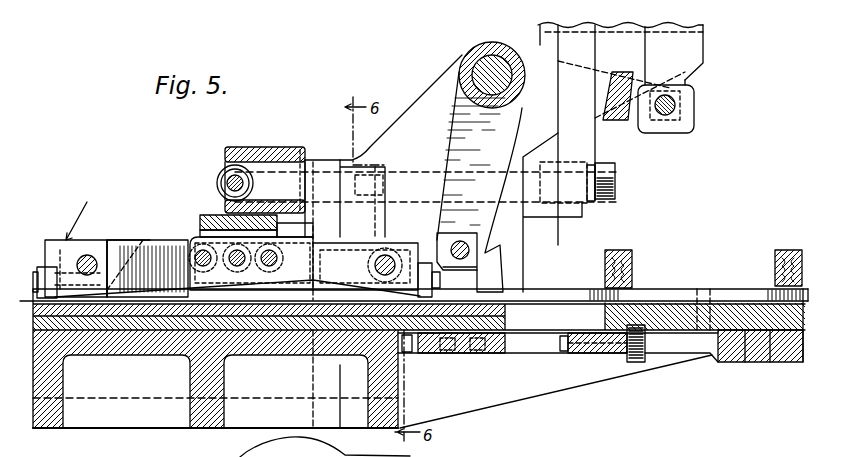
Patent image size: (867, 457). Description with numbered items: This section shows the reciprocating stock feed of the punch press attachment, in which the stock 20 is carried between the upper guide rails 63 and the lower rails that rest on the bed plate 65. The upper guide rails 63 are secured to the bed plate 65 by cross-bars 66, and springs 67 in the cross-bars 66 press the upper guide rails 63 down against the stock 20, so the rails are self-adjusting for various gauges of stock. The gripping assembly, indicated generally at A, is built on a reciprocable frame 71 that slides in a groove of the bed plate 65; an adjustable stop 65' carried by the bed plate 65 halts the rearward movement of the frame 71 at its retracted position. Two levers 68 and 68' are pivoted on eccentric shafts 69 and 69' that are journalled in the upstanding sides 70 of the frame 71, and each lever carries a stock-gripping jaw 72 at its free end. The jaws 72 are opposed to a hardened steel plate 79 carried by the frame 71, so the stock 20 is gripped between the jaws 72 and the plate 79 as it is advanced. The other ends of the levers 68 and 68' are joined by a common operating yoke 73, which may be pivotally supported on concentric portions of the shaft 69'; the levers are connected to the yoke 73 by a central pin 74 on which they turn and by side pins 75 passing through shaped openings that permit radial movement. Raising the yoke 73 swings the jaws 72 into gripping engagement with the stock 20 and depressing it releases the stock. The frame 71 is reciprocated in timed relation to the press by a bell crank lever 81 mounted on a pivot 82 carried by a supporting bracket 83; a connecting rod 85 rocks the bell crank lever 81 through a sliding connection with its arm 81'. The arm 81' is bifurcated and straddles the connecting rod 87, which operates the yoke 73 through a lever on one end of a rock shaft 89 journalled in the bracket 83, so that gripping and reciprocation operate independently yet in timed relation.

The stock 20 is at (36, 298).
The upper guide rails 63 is at (332, 300).
The bed plate 65 is at (760, 360).
The adjustable stop 65' is at (581, 355).
The cross-bars 66 is at (603, 254).
The springs 67 is at (628, 275).
The lever 68 is at (239, 250).
The lever 68' is at (364, 223).
The eccentric shaft 69 is at (125, 251).
The eccentric shaft 69' is at (376, 239).
The upstanding sides 70 is at (138, 238).
The reciprocable frame 71 is at (104, 323).
The stock-gripping jaw 72 is at (65, 255).
The operating yoke 73 is at (213, 214).
The central pin 74 is at (237, 268).
The side pins 75 is at (203, 268).
The hardened steel plate 79 is at (186, 310).
The bell crank lever 81 is at (475, 175).
The arm 81' is at (648, 115).
The pivot 82 is at (467, 56).
The supporting bracket 83 is at (424, 103).
The connecting rod 85 is at (668, 47).
The connecting rod 87 is at (568, 45).
The rock shaft 89 is at (364, 180).
The clamp assembly A is at (80, 213).